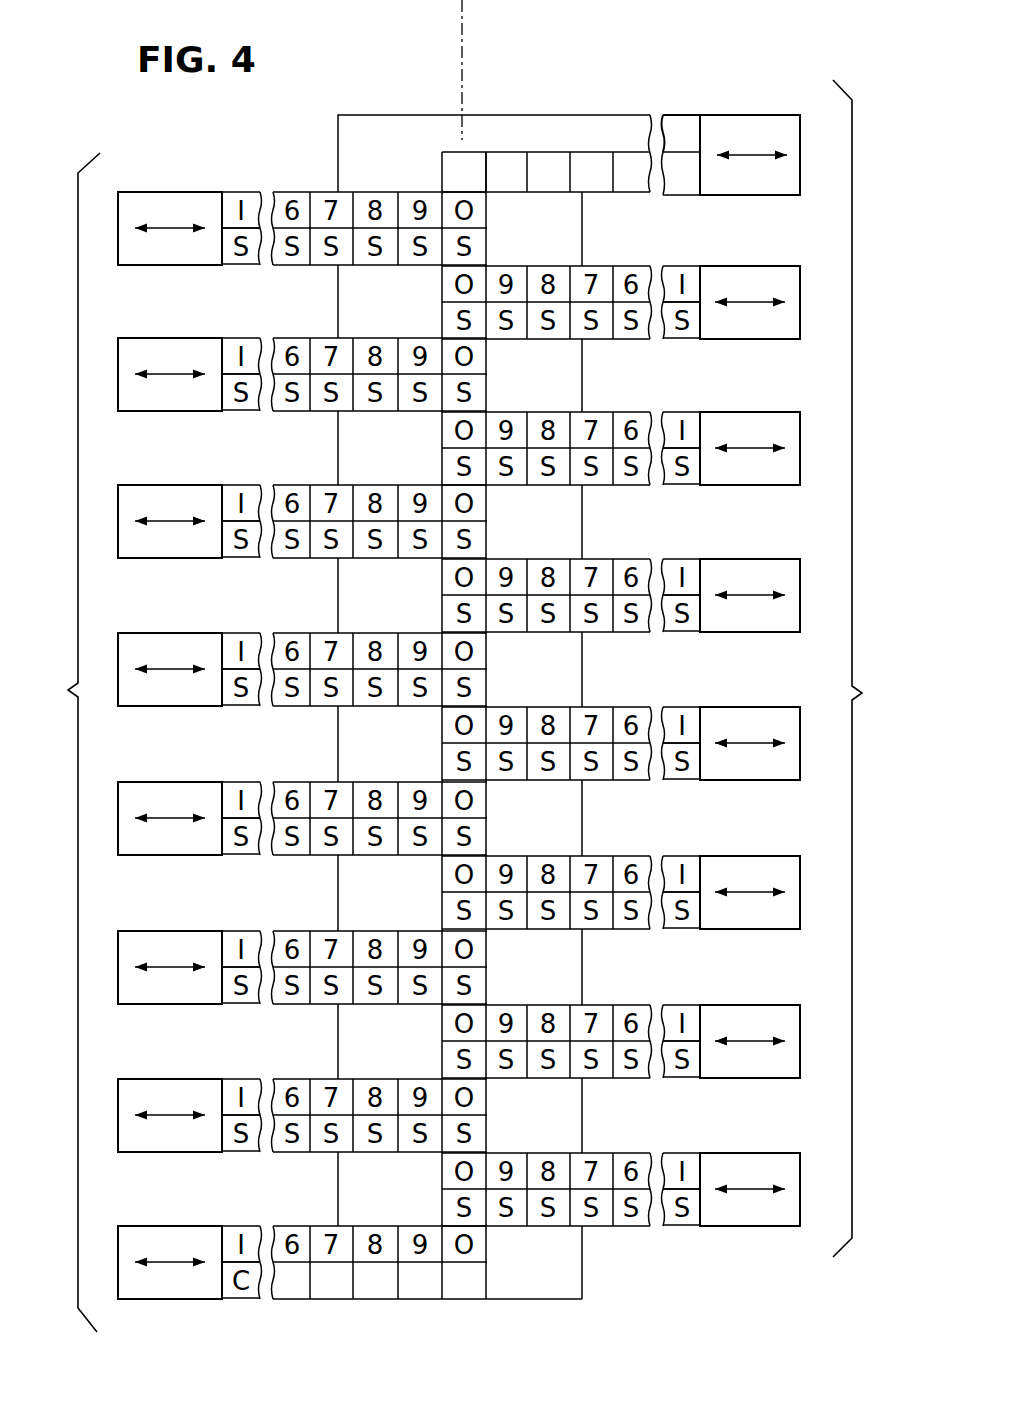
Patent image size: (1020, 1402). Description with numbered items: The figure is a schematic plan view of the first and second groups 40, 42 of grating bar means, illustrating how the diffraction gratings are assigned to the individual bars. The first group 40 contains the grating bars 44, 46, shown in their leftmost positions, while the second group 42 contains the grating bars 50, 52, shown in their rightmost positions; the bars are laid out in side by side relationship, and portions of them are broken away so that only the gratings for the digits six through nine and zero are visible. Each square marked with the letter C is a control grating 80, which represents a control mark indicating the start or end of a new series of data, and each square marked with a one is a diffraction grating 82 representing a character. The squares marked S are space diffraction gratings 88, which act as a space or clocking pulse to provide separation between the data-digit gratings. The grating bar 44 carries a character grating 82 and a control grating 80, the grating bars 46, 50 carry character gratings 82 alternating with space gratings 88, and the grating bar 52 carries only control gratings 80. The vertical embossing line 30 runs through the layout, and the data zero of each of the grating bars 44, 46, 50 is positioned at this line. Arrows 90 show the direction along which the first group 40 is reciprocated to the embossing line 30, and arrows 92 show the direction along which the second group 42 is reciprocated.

The embossing line 30 is at (512, 70).
The first group of grating bar means 40 is at (134, 734).
The second group of grating bar means 42 is at (785, 652).
The grating bar 44 is at (161, 1241).
The grating bar 46 is at (162, 644).
The grating bar 50 is at (765, 720).
The grating bar 52 is at (739, 121).
The control grating 80 is at (467, 715).
The diffraction grating representing the digit 1 82 is at (472, 703).
The space diffraction grating 88 is at (461, 727).
The arrows 90 is at (190, 745).
The arrows 92 is at (733, 672).